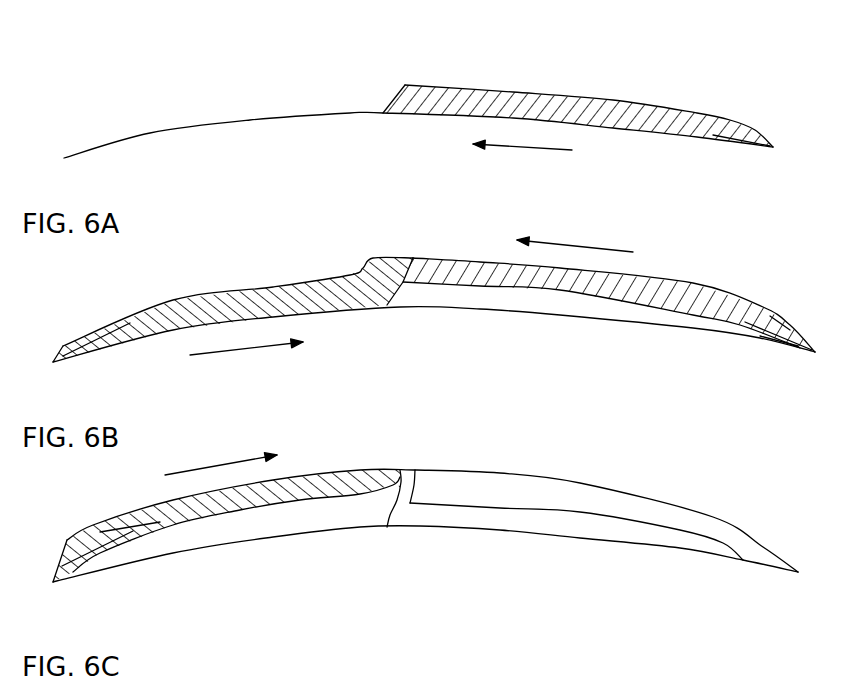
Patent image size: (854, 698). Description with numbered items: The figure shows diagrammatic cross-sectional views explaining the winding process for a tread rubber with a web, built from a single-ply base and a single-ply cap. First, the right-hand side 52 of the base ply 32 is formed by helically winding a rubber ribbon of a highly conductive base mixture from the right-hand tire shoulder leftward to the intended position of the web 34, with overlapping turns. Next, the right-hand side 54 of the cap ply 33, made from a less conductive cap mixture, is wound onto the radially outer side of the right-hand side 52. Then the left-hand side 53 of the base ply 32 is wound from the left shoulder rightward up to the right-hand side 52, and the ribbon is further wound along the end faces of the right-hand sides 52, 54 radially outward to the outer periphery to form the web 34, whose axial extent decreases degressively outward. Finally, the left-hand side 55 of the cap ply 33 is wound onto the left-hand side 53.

In FIG. 6A, the base ply 32 is at (508, 85).
In FIG. 6B, the base ply 32 is at (486, 317).
In FIG. 6C, the base ply 32 is at (413, 528).
In FIG. 6B, the cap ply 33 is at (481, 252).
In FIG. 6C, the web 34 is at (402, 492).
In FIG. 6A, the right-hand side of the base ply 52 is at (655, 98).
In FIG. 6B, the right-hand side of the base ply 52 is at (688, 333).
In FIG. 6C, the right-hand side of the base ply 52 is at (637, 547).
In FIG. 6B, the left-hand side of the base ply 53 is at (258, 285).
In FIG. 6C, the left-hand side of the base ply 53 is at (250, 523).
In FIG. 6B, the right-hand side of the cap ply 54 is at (710, 285).
In FIG. 6C, the right-hand side of the cap ply 54 is at (647, 502).
In FIG. 6C, the left-hand side of the cap ply 55 is at (322, 492).